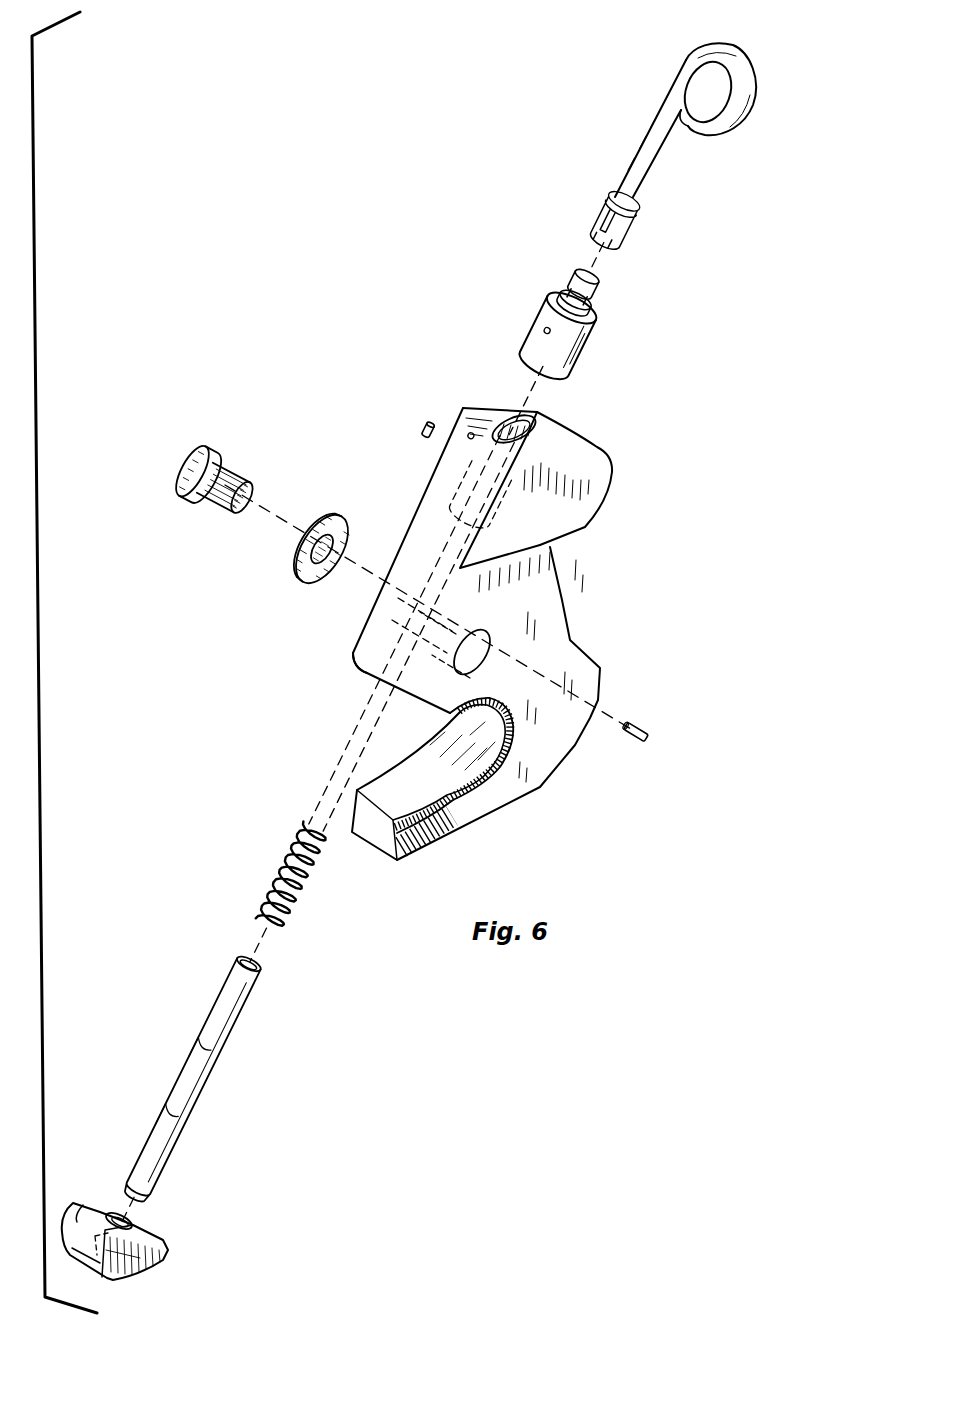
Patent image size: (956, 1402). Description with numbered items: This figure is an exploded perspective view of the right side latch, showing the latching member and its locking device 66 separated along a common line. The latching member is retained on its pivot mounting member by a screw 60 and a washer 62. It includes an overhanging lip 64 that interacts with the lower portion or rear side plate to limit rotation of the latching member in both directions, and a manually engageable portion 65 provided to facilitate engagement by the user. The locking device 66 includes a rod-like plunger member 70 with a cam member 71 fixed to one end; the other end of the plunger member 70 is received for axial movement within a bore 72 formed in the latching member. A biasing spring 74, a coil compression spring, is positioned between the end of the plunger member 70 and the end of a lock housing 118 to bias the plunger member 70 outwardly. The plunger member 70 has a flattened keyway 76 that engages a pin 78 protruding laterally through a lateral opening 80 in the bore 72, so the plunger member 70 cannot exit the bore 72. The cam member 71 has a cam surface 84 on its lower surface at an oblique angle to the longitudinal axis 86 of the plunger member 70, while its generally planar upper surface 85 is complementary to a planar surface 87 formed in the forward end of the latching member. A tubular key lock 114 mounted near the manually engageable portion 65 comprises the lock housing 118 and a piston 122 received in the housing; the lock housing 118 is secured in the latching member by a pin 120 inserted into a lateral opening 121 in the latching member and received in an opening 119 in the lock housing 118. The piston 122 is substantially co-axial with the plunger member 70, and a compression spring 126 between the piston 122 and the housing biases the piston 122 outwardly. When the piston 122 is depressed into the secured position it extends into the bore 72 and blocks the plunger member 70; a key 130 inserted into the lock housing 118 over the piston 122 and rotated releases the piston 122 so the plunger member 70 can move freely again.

The key 130 is at (645, 160).
The piston 122 is at (572, 276).
The compression spring 126 is at (566, 300).
The tubular key lock 114 is at (598, 311).
The lock housing 118 is at (558, 343).
The opening 119 is at (550, 331).
The pin 120 is at (430, 426).
The lateral opening 121 is at (485, 451).
The manually engageable portion 65 is at (574, 447).
The bore 72 is at (458, 514).
The overhanging lip 64 is at (561, 540).
The screw 60 is at (233, 471).
The washer 62 is at (297, 575).
The lateral opening 80 is at (410, 611).
The planar surface 87 is at (356, 660).
The longitudinal axis 86 is at (355, 745).
The pin 78 is at (634, 727).
The biasing spring 74 is at (298, 893).
The plunger member 70 is at (232, 976).
The locking device 66 is at (213, 1089).
The flattened keyway 76 is at (196, 1067).
The cam member 71 is at (80, 1210).
The upper surface 85 is at (140, 1235).
The cam surface 84 is at (130, 1275).